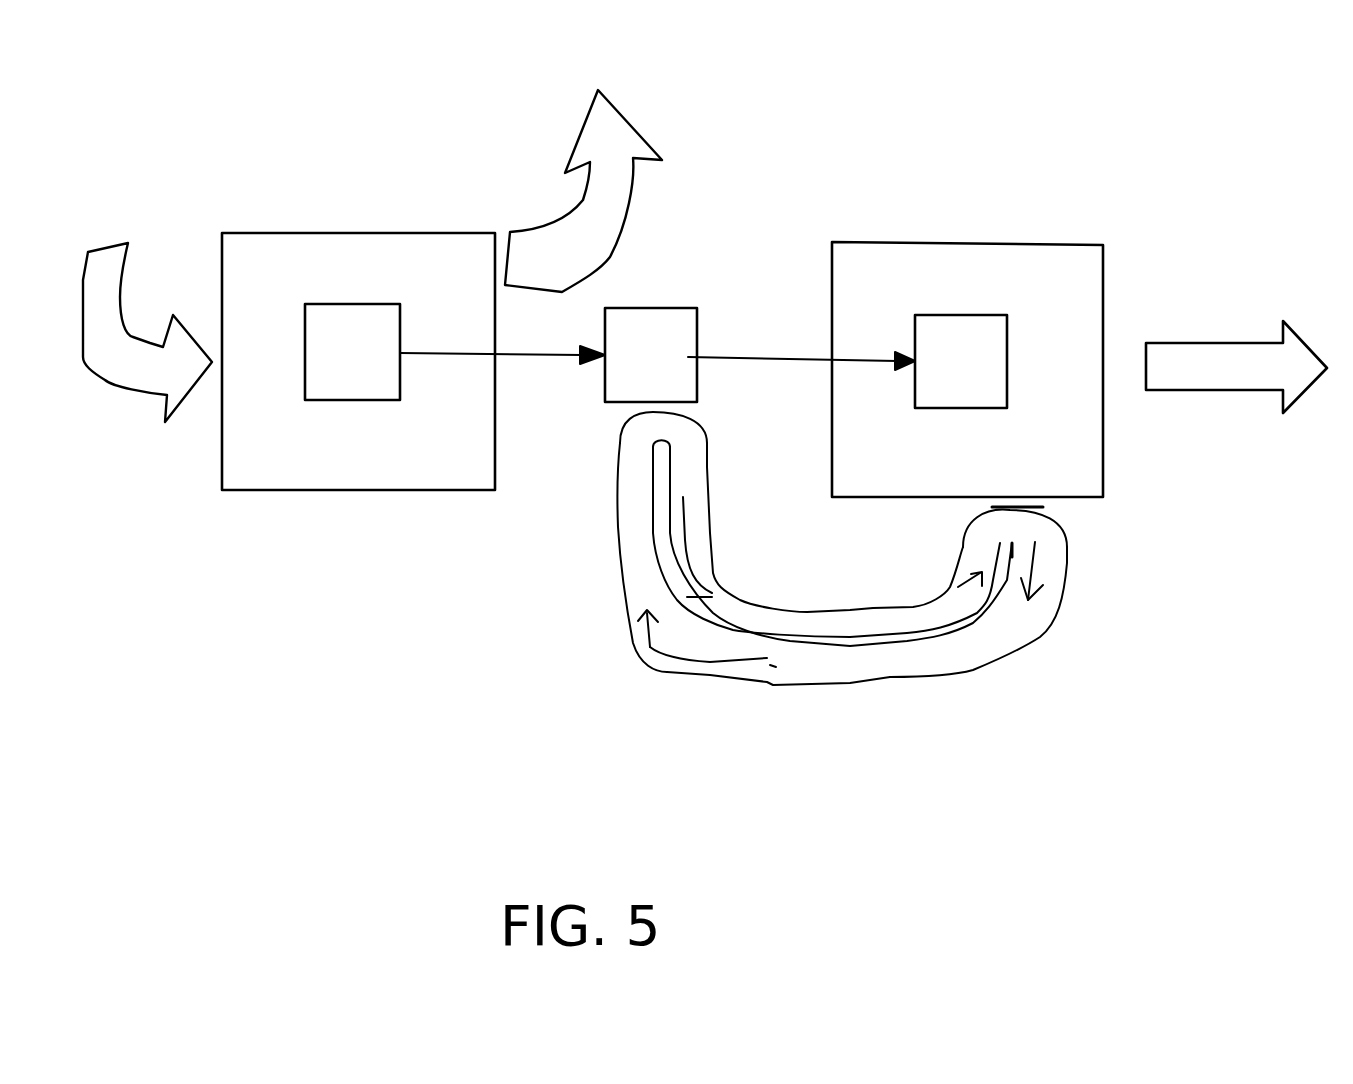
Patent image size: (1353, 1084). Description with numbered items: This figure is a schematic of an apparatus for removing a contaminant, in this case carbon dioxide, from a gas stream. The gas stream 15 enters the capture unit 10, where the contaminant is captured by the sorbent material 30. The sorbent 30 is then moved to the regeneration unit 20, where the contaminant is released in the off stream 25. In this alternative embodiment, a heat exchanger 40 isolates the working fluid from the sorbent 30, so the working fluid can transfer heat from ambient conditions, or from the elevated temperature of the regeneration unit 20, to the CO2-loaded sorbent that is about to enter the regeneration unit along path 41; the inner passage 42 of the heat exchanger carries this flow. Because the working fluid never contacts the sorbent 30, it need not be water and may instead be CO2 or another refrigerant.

The capture unit 10 is at (397, 233).
The gas stream 15 is at (162, 382).
The regeneration unit 20 is at (1007, 242).
The off stream 25 is at (1212, 381).
The sorbent material 30 is at (335, 351).
The heat exchanger 40 is at (1030, 633).
The path 41 is at (790, 675).
The inner tube 42 is at (805, 627).